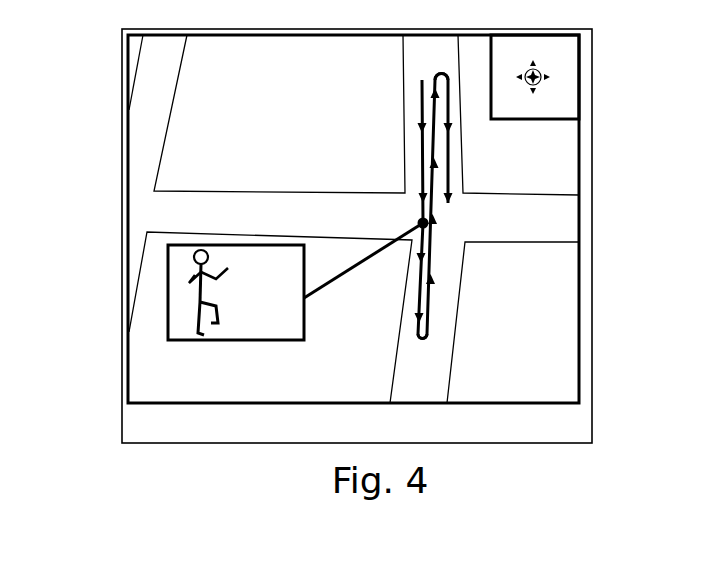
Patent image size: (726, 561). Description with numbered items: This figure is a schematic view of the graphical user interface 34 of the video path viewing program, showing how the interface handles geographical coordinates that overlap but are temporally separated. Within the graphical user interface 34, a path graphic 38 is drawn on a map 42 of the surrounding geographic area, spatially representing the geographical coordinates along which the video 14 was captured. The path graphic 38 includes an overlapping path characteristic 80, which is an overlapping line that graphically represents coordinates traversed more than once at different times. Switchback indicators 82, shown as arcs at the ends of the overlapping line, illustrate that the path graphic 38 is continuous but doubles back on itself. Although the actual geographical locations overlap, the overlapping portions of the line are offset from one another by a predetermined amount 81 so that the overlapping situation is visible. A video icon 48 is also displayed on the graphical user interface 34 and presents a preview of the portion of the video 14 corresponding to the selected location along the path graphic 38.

The graphical user interface 34 is at (592, 160).
The map 42 is at (244, 75).
The overlapping path characteristic 80 is at (480, 156).
The video icon 48 is at (168, 325).
The video 14 is at (182, 283).
The path graphic 38 is at (422, 183).
The predetermined amount 81 is at (363, 297).
The switchback indicators 82 is at (438, 73).